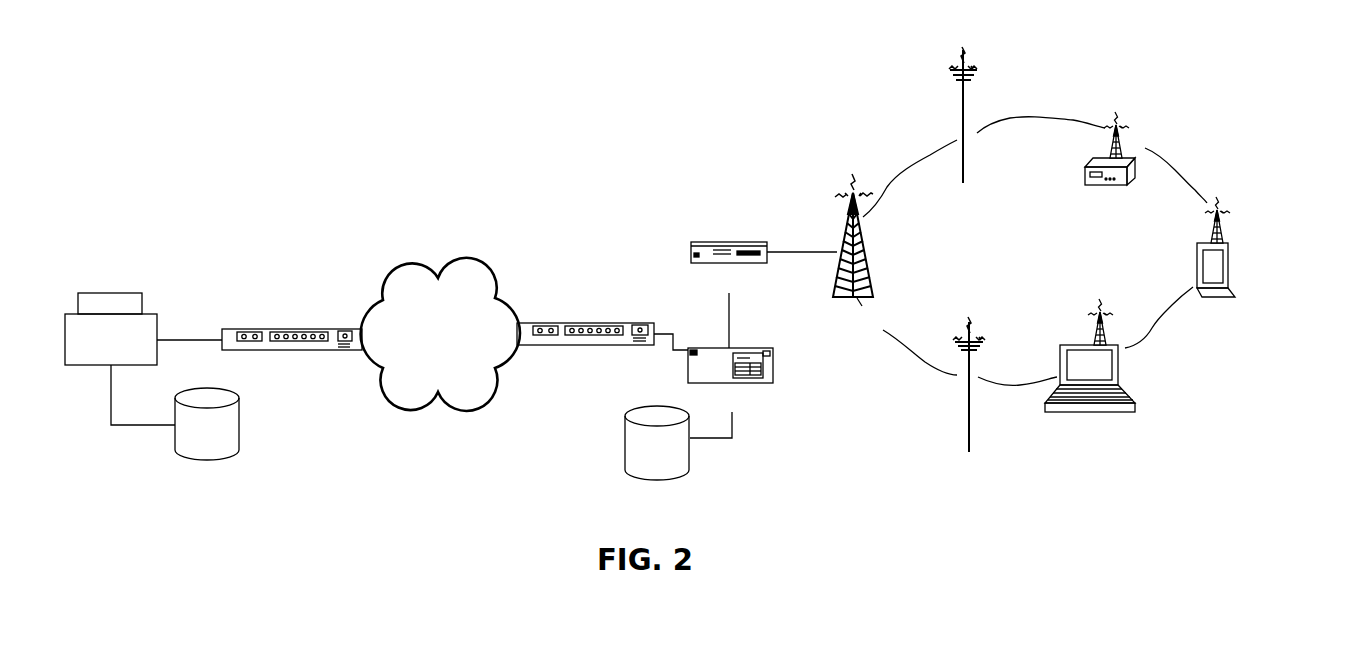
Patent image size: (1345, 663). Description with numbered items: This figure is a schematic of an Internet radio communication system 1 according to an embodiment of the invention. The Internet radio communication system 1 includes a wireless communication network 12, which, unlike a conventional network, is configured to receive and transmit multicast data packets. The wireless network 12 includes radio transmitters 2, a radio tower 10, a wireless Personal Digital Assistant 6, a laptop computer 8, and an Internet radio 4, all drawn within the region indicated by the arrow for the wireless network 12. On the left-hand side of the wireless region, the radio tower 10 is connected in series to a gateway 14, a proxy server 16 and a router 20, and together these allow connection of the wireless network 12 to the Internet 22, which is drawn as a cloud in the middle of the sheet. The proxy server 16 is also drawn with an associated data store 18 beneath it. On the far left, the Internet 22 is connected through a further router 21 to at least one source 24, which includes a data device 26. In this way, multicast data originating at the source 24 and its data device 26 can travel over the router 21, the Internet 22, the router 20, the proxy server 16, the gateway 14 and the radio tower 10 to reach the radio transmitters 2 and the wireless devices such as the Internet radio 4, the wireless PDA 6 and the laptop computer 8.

The Internet radio communication system 1 is at (520, 86).
The radio transmitters 2 is at (983, 67).
The Internet radio 4 is at (1133, 157).
The wireless Personal Digital Assistant 6 is at (1228, 260).
The laptop computer 8 is at (1127, 395).
The radio tower 10 is at (845, 185).
The wireless communication network 12 is at (1079, 86).
The gateway 14 is at (730, 242).
The proxy server 16 is at (773, 367).
The proxy data store 18 is at (625, 453).
The router 20 is at (595, 321).
The router 21 is at (297, 328).
The Internet 22 is at (462, 268).
The source 24 is at (112, 293).
The data device 26 is at (204, 461).